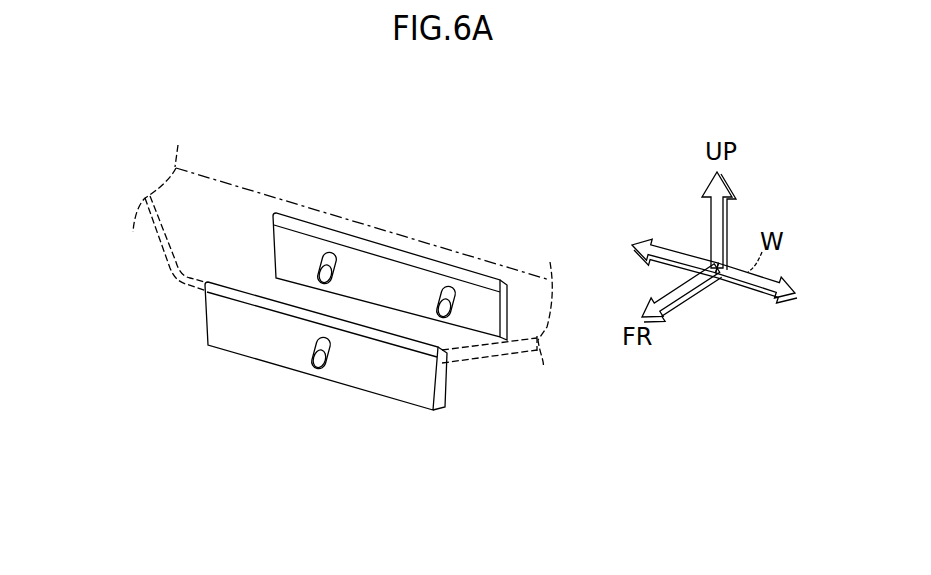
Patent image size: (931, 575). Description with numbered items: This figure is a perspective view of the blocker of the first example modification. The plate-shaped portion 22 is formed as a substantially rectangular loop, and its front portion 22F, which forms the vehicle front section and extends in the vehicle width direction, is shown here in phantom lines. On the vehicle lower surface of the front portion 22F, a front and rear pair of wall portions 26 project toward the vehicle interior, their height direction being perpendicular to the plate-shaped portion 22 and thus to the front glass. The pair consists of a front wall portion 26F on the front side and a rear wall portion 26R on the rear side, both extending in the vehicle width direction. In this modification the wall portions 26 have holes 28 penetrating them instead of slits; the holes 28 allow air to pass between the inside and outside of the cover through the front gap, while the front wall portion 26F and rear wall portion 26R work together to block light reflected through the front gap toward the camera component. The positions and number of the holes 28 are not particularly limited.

The plate-shaped portion 22 is at (312, 256).
The front portion 22F is at (166, 262).
The wall portions 26 is at (389, 375).
The front wall portion 26F is at (389, 400).
The rear wall portion 26R is at (503, 337).
The holes 28 is at (336, 258).